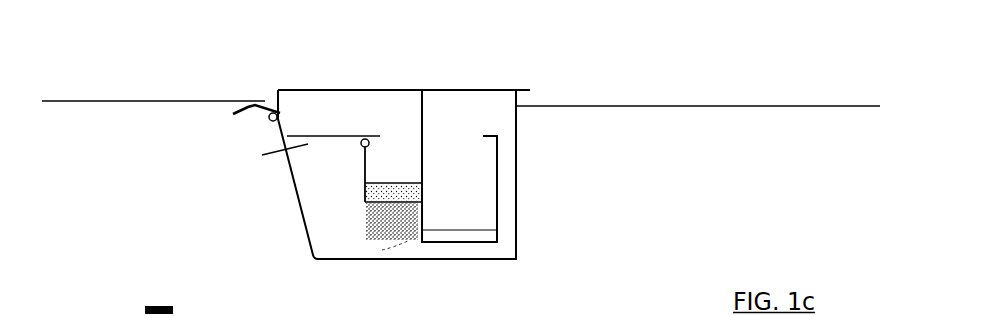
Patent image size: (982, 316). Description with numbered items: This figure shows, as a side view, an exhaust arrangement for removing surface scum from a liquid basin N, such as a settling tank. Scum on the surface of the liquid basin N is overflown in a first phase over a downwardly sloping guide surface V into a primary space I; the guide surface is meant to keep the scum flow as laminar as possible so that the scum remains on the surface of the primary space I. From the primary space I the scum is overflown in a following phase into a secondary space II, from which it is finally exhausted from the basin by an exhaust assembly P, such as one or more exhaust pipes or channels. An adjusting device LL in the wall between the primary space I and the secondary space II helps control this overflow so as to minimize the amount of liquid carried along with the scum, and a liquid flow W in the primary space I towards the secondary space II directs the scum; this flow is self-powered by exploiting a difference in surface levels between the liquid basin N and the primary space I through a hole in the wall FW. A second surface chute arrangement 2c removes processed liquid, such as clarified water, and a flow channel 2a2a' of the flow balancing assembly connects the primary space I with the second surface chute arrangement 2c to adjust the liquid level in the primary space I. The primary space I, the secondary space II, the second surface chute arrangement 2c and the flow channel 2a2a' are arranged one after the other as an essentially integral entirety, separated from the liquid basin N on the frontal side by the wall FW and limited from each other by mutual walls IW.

The liquid basin N is at (190, 101).
The downwardly sloping guide surface V is at (257, 104).
The liquid flow W is at (302, 146).
The adjusting device LL is at (369, 136).
The mutual walls IW is at (369, 162).
The flow channel 2a2a' is at (526, 244).
The exhaust assembly P is at (396, 247).
The wall FW is at (301, 202).
The primary space I is at (325, 180).
The secondary space II is at (406, 130).
The second surface chute arrangement 2c is at (470, 198).